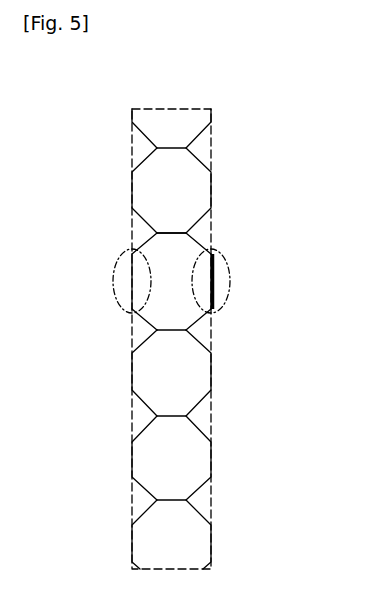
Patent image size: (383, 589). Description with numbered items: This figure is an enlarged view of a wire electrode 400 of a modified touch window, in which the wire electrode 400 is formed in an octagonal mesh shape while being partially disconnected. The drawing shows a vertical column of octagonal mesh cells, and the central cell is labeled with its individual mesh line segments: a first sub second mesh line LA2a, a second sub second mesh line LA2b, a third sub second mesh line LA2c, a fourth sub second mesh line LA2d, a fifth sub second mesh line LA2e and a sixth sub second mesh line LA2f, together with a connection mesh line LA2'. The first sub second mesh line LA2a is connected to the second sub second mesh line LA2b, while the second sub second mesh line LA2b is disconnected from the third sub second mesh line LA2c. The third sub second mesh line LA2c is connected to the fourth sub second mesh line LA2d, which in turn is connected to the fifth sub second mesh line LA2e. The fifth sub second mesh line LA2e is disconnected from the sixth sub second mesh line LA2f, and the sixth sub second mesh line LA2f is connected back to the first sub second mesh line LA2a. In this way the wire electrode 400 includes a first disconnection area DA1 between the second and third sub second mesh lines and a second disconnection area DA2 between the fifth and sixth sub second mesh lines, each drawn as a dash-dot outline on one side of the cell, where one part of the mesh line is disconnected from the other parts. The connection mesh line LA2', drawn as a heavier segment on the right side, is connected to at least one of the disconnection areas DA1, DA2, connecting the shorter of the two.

The wire electrode 400 is at (160, 87).
The first sub second mesh line LA2a is at (167, 232).
The second sub second mesh line LA2b is at (198, 244).
The connection mesh line LA2' is at (244, 281).
The third sub second mesh line LA2c is at (199, 318).
The fourth sub second mesh line LA2d is at (167, 331).
The fifth sub second mesh line LA2e is at (139, 317).
The sixth sub second mesh line LA2f is at (139, 247).
The first disconnection area DA1 is at (222, 306).
The second disconnection area DA2 is at (113, 276).